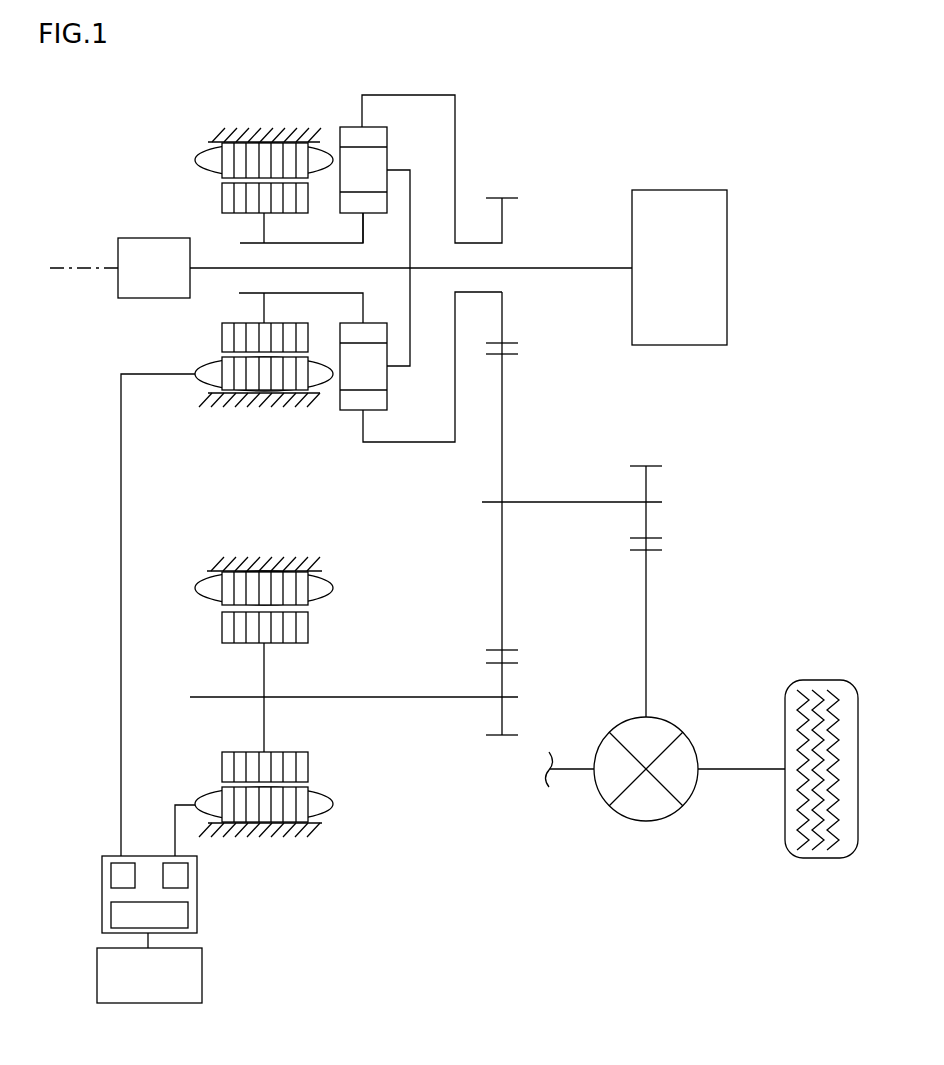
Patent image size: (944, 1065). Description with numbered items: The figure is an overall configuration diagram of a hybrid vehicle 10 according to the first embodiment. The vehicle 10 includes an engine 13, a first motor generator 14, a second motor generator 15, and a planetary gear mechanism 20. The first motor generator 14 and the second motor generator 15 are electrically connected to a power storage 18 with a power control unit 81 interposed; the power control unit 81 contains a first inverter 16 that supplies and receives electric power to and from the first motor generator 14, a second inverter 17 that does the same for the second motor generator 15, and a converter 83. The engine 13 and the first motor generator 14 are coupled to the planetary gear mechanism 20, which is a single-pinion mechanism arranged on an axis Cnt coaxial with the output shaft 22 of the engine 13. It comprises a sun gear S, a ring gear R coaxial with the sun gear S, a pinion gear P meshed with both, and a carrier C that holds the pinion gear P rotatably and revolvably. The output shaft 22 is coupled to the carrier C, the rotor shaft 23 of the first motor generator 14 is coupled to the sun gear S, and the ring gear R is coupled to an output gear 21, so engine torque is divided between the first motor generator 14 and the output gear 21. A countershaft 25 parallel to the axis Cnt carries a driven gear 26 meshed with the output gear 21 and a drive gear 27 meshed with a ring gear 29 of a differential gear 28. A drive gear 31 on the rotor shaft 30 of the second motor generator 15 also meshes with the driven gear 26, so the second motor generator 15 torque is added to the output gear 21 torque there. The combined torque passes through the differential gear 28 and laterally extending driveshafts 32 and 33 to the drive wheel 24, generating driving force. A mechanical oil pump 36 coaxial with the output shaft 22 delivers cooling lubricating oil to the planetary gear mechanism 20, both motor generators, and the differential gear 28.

The hybrid vehicle 10 is at (632, 124).
The engine 13 is at (727, 218).
The first motor generator 14 is at (197, 150).
The second motor generator 15 is at (197, 580).
The first inverter 16 is at (111, 868).
The second inverter 17 is at (188, 868).
The power storage 18 is at (196, 948).
The planetary gear mechanism 20 is at (397, 246).
The output gear 21 is at (510, 343).
The output shaft 22 is at (600, 263).
The rotor shaft 23 is at (248, 243).
The drive wheel 24 is at (820, 680).
The countershaft 25 is at (562, 506).
The driven gear 26 is at (510, 355).
The drive gear 27 is at (654, 470).
The differential gear 28 is at (672, 722).
The ring gear 29 is at (654, 553).
The rotor shaft 30 is at (203, 695).
The drive gear 31 is at (510, 664).
The driveshaft 32 is at (572, 772).
The driveshaft 33 is at (740, 772).
The mechanical oil pump 36 is at (156, 238).
The power control unit 81 is at (143, 894).
The converter 83 is at (111, 918).
The ring gear R is at (378, 131).
The pinion gear P is at (347, 174).
The sun gear S is at (374, 208).
The carrier C is at (412, 180).
The axis Cnt is at (65, 263).